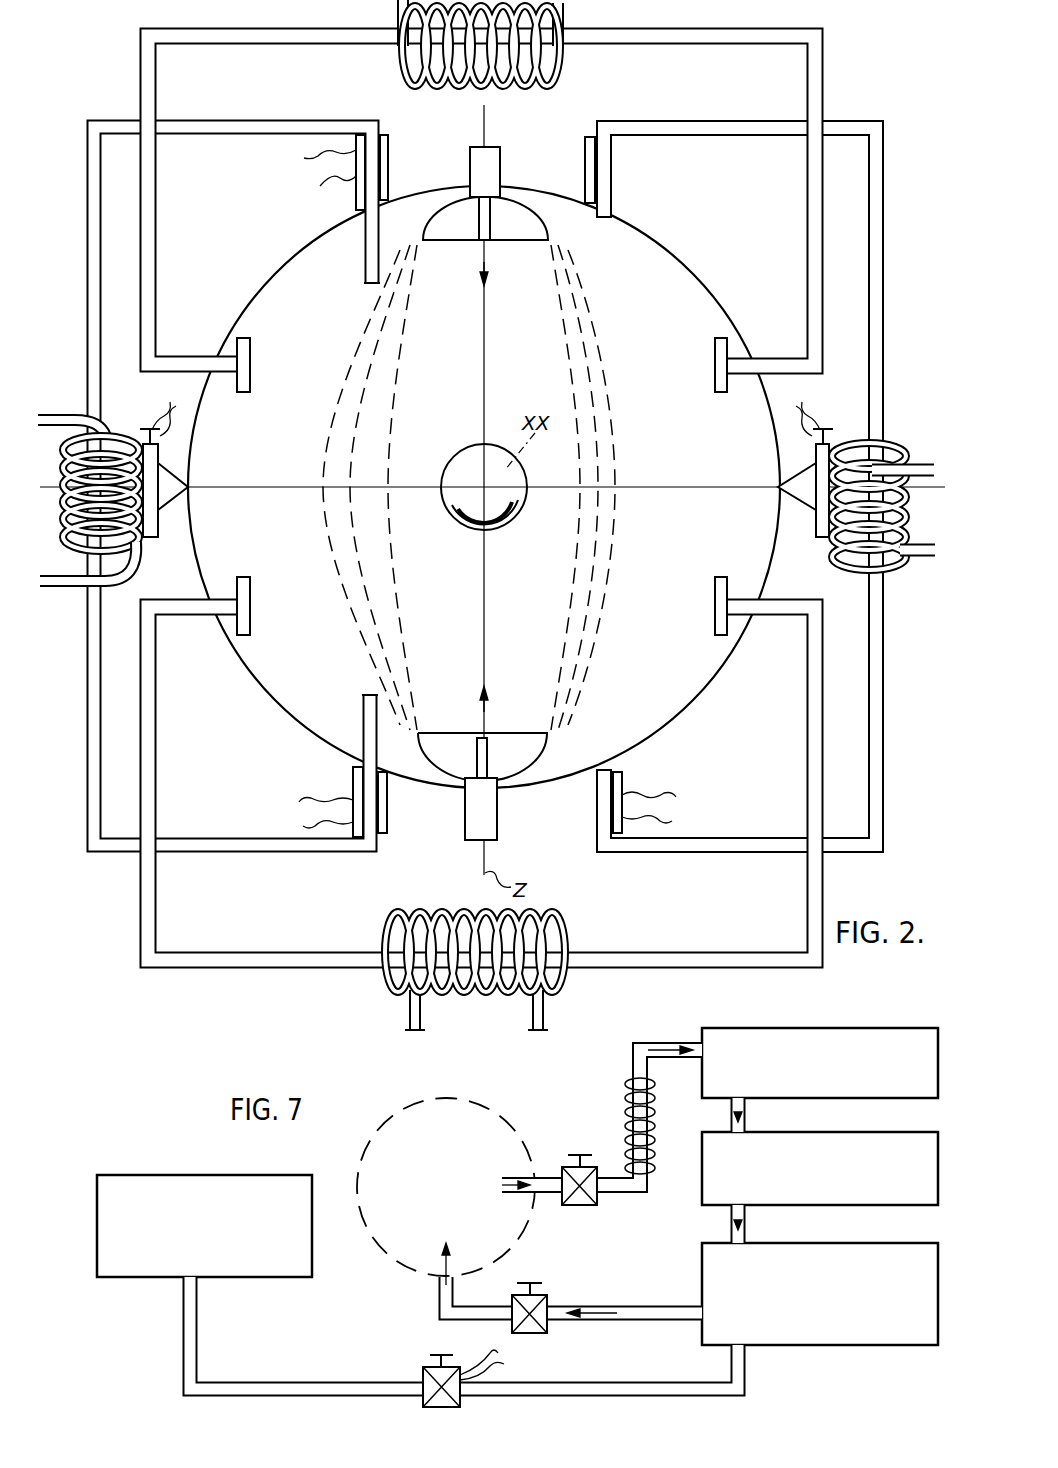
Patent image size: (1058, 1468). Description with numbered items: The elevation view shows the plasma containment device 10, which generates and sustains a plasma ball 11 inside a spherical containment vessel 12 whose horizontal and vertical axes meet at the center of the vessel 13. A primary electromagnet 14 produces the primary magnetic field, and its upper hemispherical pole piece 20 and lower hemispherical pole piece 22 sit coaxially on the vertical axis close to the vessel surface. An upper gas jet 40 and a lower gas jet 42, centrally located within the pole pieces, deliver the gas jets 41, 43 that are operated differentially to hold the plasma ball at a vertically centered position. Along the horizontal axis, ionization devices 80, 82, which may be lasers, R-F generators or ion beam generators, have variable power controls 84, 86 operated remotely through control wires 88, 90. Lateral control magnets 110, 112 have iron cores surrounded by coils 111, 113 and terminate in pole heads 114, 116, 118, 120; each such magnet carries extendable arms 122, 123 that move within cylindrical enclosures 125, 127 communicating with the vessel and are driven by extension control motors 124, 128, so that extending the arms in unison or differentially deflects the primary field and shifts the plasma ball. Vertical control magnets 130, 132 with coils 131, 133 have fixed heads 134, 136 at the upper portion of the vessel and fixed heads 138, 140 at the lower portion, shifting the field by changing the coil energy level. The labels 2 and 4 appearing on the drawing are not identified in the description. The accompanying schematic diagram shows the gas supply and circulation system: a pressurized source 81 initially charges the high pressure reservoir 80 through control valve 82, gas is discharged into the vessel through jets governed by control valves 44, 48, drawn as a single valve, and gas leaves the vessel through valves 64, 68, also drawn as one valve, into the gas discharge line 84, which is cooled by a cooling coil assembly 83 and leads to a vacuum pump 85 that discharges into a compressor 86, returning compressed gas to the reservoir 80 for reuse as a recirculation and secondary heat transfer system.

In FIG. 2, the axial inlet port 2 is at (440, 165).
In FIG. 2, the radial side port / coil 4 is at (81, 476).
In FIG. 2, the plasma containment device 10 is at (882, 74).
In FIG. 2, the plasma ball 11 is at (465, 460).
In FIG. 2, the containment vessel 12 is at (664, 237).
In FIG. 7, the containment vessel 12 is at (413, 1097).
In FIG. 2, the center of the vessel 13 is at (484, 487).
In FIG. 2, the electromagnet 14 is at (503, 178).
In FIG. 2, the upper hemispherical pole piece 20 is at (532, 206).
In FIG. 2, the lower hemispherical pole piece 22 is at (498, 792).
In FIG. 2, the upper gas jet 40 is at (450, 230).
In FIG. 2, the gas jet 41 is at (481, 273).
In FIG. 2, the lower gas jet 42 is at (470, 755).
In FIG. 2, the gas jet 43 is at (479, 700).
In FIG. 2, the ionization device / high pressure reservoir 80 is at (163, 480).
In FIG. 7, the ionization device / high pressure reservoir 80 is at (820, 1294).
In FIG. 7, the pressurized source 81 is at (204, 1226).
In FIG. 2, the control valve / ionization device 82 is at (774, 479).
In FIG. 7, the control valve / ionization device 82 is at (427, 1367).
In FIG. 7, the cooling coil assembly 83 is at (626, 1094).
In FIG. 2, the gas discharge line / power control 84 is at (152, 537).
In FIG. 7, the gas discharge line / power control 84 is at (648, 1042).
In FIG. 7, the vacuum pump 85 is at (820, 1063).
In FIG. 2, the compressor / power control 86 is at (822, 537).
In FIG. 7, the compressor / power control 86 is at (820, 1168).
In FIG. 2, the control wires 88 is at (160, 427).
In FIG. 2, the control wires 90 is at (812, 420).
In FIG. 2, the lateral control magnet 110 is at (88, 247).
In FIG. 2, the coil 111 is at (65, 412).
In FIG. 2, the lateral control magnet 112 is at (886, 242).
In FIG. 2, the coil 113 is at (891, 574).
In FIG. 2, the pole head 114 is at (372, 284).
In FIG. 2, the pole head 116 is at (363, 700).
In FIG. 2, the pole head 118 is at (598, 172).
In FIG. 2, the pole head 120 is at (618, 790).
In FIG. 2, the extendable arm 122 is at (365, 190).
In FIG. 2, the extendable arm 123 is at (357, 738).
In FIG. 2, the extension control motor 124 is at (386, 137).
In FIG. 2, the cylindrical enclosure 125 is at (388, 165).
In FIG. 2, the cylindrical enclosure 127 is at (387, 795).
In FIG. 2, the extension control motor 128 is at (387, 835).
In FIG. 2, the vertical control magnet 130 is at (800, 27).
In FIG. 2, the coil 131 is at (565, 16).
In FIG. 2, the vertical control magnet 132 is at (677, 968).
In FIG. 2, the coil 133 is at (470, 992).
In FIG. 2, the fixed head 134 is at (250, 345).
In FIG. 2, the fixed head 136 is at (722, 338).
In FIG. 2, the fixed head 138 is at (244, 577).
In FIG. 2, the fixed head 140 is at (722, 636).
In FIG. 7, the valve 64 is at (617, 1197).
In FIG. 7, the valve 68 is at (589, 1205).
In FIG. 7, the control valve 44 is at (583, 1291).
In FIG. 7, the control valve 48 is at (512, 1296).